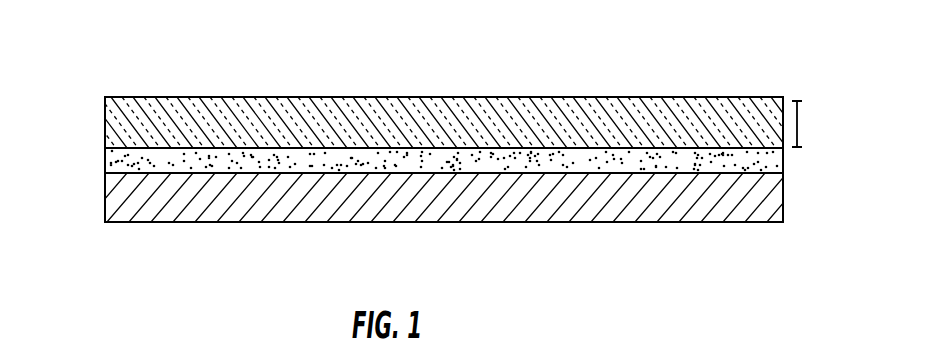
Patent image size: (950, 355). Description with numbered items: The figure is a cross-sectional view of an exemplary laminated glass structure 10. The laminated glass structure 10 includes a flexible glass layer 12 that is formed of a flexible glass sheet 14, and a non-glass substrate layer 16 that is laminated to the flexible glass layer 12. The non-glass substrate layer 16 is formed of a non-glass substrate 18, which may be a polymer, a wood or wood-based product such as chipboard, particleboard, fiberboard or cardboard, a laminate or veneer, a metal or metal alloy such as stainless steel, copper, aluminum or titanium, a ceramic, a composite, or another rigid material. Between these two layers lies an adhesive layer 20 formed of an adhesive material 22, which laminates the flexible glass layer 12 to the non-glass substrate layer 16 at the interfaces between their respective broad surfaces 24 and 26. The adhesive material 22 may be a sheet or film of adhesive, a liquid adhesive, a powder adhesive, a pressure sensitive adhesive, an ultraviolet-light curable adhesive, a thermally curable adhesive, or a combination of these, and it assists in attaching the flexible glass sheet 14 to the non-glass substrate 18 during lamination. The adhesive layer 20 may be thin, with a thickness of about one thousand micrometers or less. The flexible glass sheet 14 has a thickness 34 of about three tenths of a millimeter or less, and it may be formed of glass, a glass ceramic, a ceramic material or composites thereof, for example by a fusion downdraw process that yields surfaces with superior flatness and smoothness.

The laminated glass structure 10 is at (870, 110).
The flexible glass layer 12 is at (88, 125).
The flexible glass sheet 14 is at (457, 125).
The non-glass substrate layer 16 is at (88, 207).
The non-glass substrate 18 is at (676, 192).
The adhesive layer 20 is at (792, 162).
The adhesive material 22 is at (645, 155).
The broad surface 24 is at (310, 147).
The broad surface 26 is at (185, 173).
The thickness 34 is at (797, 123).